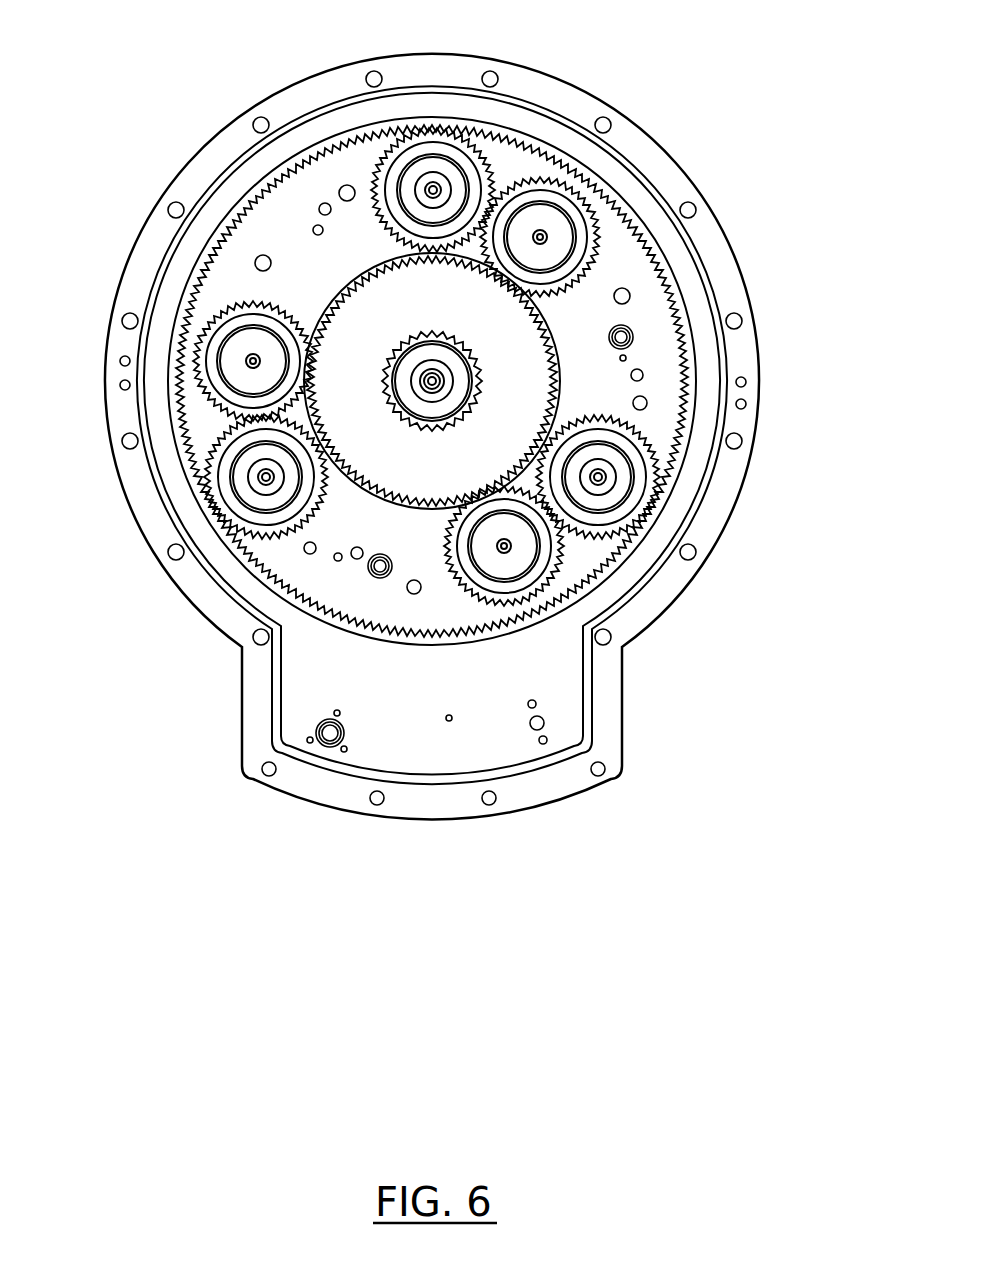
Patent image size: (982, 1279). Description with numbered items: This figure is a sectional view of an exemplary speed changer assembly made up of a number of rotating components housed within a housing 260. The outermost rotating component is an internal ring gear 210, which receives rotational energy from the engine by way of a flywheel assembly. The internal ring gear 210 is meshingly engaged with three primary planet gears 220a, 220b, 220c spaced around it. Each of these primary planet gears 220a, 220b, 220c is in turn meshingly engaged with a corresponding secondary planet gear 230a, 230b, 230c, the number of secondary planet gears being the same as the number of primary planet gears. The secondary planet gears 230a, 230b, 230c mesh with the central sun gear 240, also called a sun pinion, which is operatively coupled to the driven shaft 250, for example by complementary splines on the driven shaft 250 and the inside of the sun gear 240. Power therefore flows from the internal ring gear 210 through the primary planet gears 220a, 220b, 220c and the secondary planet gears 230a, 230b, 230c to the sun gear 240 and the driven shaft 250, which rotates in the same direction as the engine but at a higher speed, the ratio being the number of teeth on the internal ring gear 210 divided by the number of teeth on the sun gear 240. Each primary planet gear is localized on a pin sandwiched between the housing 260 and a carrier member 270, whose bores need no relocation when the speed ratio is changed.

The internal ring gear 210 is at (686, 393).
The primary planet gear 220a is at (640, 507).
The primary planet gear 220b is at (438, 140).
The primary planet gear 220c is at (218, 503).
The secondary planet gear 230a is at (547, 578).
The secondary planet gear 230b is at (551, 187).
The secondary planet gear 230c is at (213, 387).
The sun gear 240 is at (518, 368).
The driven shaft 250 is at (408, 368).
The housing 260 is at (663, 175).
The carrier member 270 is at (592, 337).